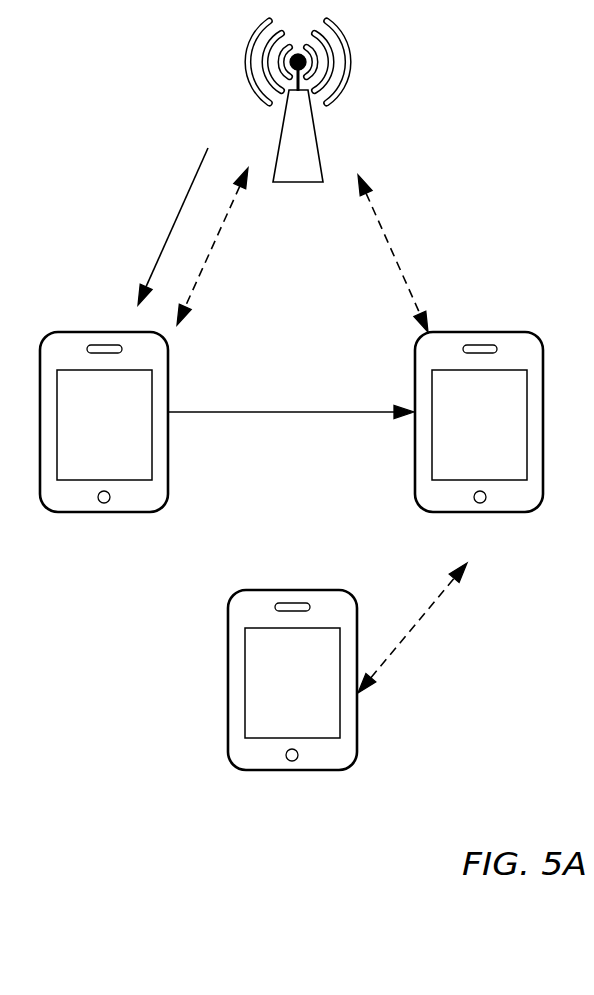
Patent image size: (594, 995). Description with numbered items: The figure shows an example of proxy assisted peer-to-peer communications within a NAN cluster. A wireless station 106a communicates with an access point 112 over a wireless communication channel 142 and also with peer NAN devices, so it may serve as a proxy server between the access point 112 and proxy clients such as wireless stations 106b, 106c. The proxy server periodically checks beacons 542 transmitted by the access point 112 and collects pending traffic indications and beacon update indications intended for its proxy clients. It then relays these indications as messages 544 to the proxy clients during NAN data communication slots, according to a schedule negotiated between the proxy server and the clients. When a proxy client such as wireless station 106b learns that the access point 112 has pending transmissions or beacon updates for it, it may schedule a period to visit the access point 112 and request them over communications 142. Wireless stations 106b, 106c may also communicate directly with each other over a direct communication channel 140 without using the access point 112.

The access point 112 is at (278, 183).
The wireless station 106a is at (102, 512).
The wireless station 106b is at (479, 512).
The wireless station 106c is at (291, 770).
The beacons 542 is at (176, 218).
The wireless communication channel 142 is at (225, 228).
The messages 544 is at (285, 413).
The direct communication channel 140 is at (415, 625).